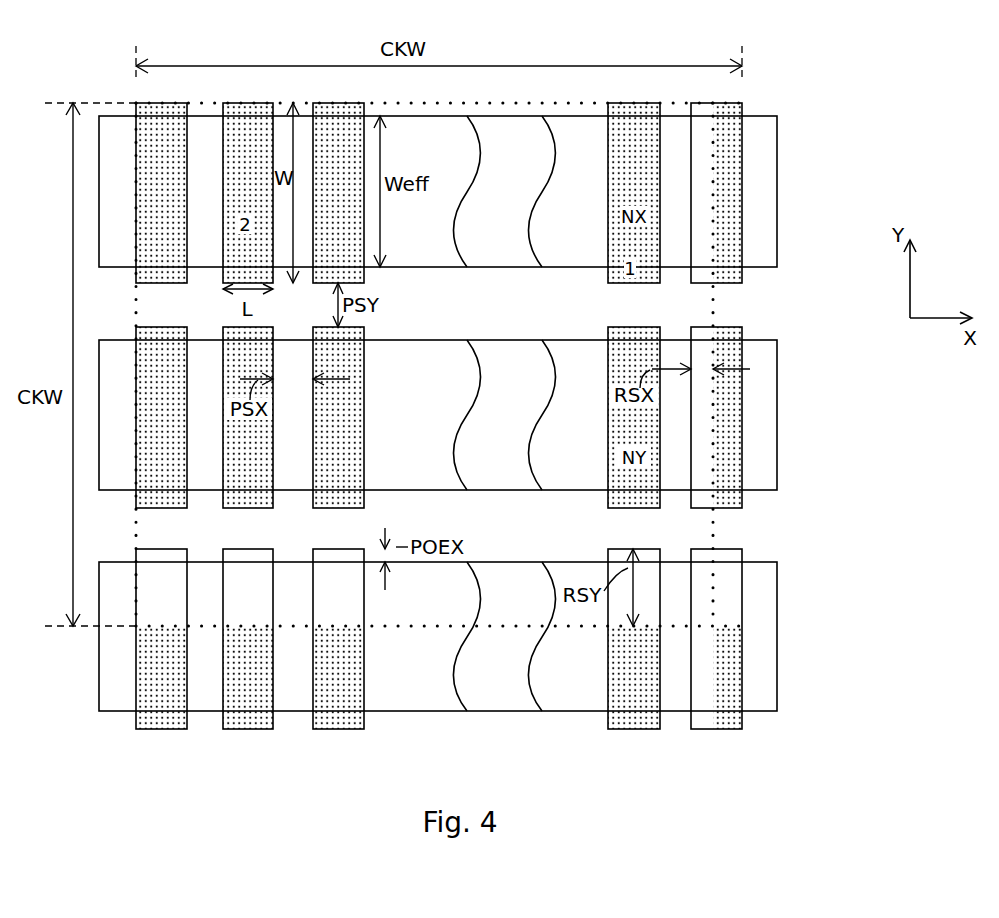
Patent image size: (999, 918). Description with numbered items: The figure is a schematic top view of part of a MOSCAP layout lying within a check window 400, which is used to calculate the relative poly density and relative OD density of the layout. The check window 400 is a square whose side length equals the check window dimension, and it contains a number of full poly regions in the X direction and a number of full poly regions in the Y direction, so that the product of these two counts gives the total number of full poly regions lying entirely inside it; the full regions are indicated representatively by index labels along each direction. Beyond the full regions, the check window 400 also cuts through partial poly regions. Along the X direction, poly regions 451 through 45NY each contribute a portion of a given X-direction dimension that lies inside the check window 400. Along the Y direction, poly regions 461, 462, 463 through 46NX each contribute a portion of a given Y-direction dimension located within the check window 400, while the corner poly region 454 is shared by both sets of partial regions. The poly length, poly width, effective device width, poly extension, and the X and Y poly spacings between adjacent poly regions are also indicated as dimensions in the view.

The check window 400 is at (533, 103).
The partial poly region 451 is at (727, 103).
The partial poly region 45NY is at (732, 327).
The partial poly region 461 is at (157, 729).
The partial poly region 462 is at (245, 729).
The partial poly region 463 is at (340, 729).
The partial poly region 46NX is at (632, 729).
The dummy gate line / boundary gate 454 is at (720, 729).